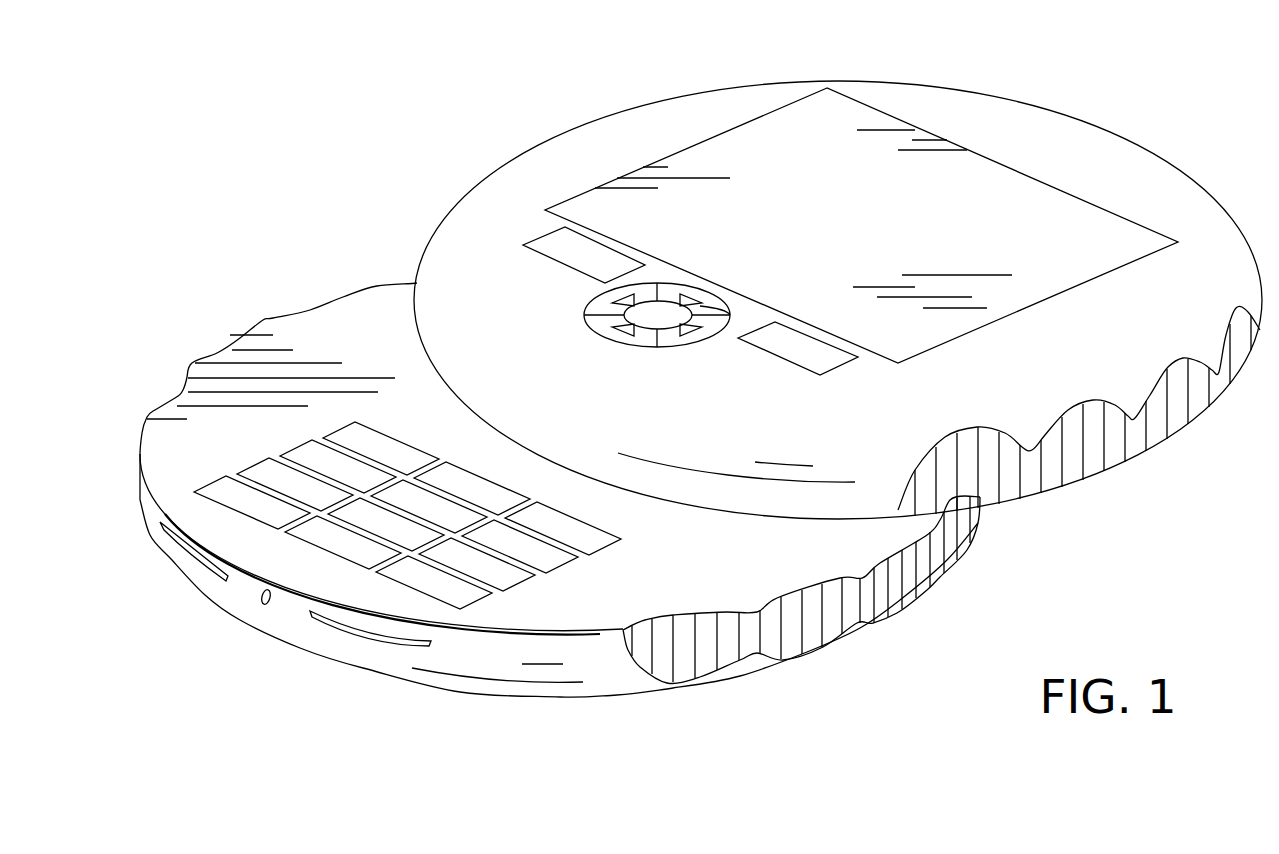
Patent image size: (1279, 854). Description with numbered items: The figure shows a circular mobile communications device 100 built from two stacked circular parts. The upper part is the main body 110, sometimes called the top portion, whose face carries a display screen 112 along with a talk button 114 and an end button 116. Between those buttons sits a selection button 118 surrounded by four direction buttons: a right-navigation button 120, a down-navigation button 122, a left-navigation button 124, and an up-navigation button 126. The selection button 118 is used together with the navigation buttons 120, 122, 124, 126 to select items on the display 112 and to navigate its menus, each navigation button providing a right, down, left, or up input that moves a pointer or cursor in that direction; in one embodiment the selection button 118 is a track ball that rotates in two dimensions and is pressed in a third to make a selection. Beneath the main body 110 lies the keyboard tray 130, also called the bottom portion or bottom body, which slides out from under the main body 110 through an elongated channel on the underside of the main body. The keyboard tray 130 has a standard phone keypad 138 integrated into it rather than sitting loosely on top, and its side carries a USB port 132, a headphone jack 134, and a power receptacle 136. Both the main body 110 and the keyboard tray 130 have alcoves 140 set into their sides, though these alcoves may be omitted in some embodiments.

The circular mobile communications device 100 is at (253, 152).
The main body 110 is at (687, 83).
The display screen 112 is at (1075, 187).
The talk button 114 is at (523, 245).
The end button 116 is at (826, 377).
The selection button 118 is at (650, 330).
The right-navigation button 120 is at (642, 345).
The down-navigation button 122 is at (592, 330).
The left-navigation button 124 is at (595, 297).
The up-navigation button 126 is at (731, 298).
The keyboard tray 130 is at (620, 708).
The USB port 132 is at (372, 643).
The headphone jack 134 is at (264, 603).
The power receptacle 136 is at (188, 546).
The phone keypad 138 is at (625, 562).
The alcoves 140 is at (176, 397).